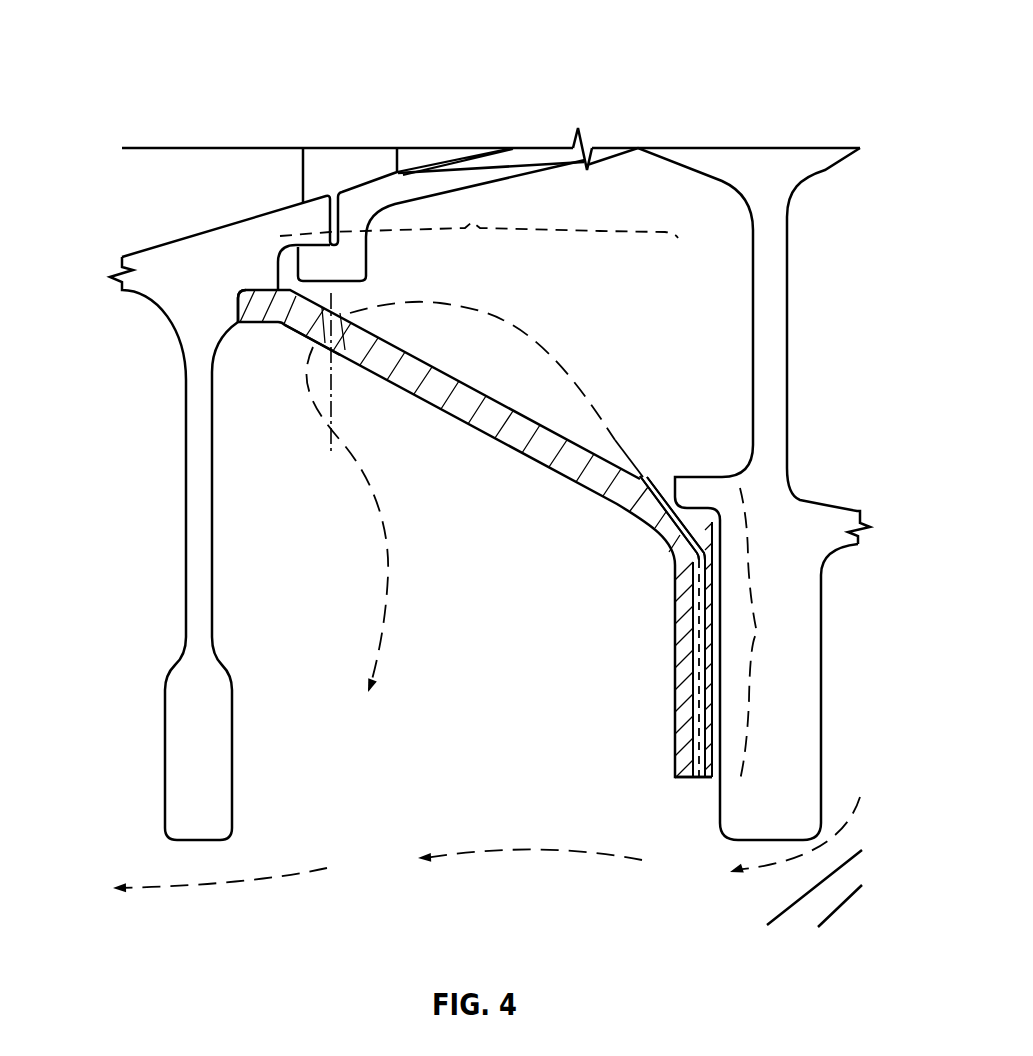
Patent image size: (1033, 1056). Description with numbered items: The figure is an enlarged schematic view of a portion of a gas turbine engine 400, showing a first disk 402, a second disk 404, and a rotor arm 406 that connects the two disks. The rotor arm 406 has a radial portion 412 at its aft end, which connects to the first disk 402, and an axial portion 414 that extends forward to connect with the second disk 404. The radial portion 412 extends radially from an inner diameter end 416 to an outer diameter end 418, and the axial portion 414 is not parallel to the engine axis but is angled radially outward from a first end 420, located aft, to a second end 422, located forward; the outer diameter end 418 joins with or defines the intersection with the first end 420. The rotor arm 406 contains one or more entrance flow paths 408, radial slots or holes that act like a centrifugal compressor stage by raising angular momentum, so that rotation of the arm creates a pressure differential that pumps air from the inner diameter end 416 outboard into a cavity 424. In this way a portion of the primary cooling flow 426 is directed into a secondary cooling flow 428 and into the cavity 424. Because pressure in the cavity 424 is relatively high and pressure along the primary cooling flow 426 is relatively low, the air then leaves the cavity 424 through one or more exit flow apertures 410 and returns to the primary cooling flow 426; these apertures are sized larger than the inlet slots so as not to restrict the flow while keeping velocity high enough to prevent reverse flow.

The gas turbine engine 400 is at (134, 58).
The first disk 402 is at (778, 443).
The second disk 404 is at (177, 750).
The rotor arm 406 is at (498, 428).
The entrance flow paths 408 is at (683, 618).
The exit flow apertures 410 is at (300, 343).
The radial portion 412 is at (675, 708).
The axial portion 414 is at (477, 219).
The inner diameter end 416 is at (668, 787).
The outer diameter end 418 is at (673, 460).
The first end 420 is at (673, 460).
The second end 422 is at (241, 339).
The cavity 424 is at (665, 200).
The primary cooling flow 426 is at (560, 850).
The secondary cooling flow 428 is at (507, 320).